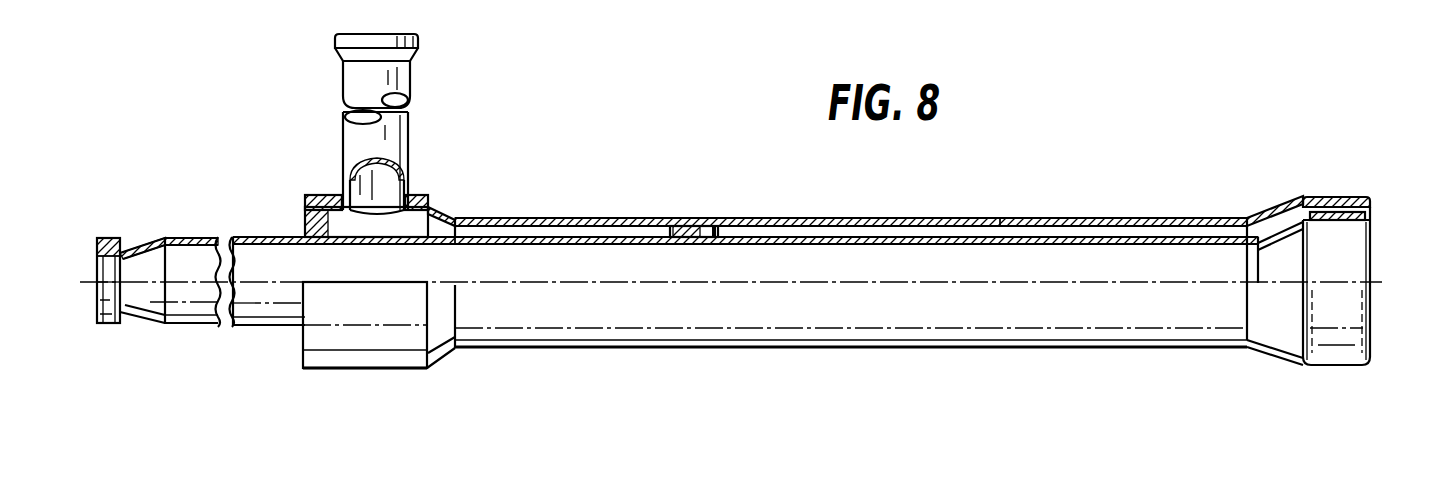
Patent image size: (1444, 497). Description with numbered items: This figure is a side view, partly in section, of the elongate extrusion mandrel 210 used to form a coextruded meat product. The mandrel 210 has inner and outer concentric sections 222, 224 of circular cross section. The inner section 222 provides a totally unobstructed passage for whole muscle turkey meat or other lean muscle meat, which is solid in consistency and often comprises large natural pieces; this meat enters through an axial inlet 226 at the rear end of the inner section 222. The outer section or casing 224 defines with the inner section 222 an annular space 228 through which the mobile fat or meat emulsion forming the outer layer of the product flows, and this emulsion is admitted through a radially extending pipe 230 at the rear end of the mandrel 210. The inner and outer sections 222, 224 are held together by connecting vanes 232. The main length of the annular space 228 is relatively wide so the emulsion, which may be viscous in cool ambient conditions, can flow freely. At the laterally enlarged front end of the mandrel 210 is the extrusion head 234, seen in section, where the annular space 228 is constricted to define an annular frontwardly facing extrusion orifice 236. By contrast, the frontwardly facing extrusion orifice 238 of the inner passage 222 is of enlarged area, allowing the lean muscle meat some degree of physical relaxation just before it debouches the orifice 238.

The extrusion mandrel 210 is at (918, 350).
The inner section 222 is at (998, 238).
The outer section 224 is at (1092, 218).
The axial inlet 226 is at (188, 260).
The annular space 228 is at (597, 232).
The radially extending pipe 230 is at (410, 138).
The vanes 232 is at (693, 227).
The extrusion head 234 is at (1335, 332).
The annular extrusion orifice 236 is at (1368, 208).
The extrusion orifice of inner passage 238 is at (1357, 265).